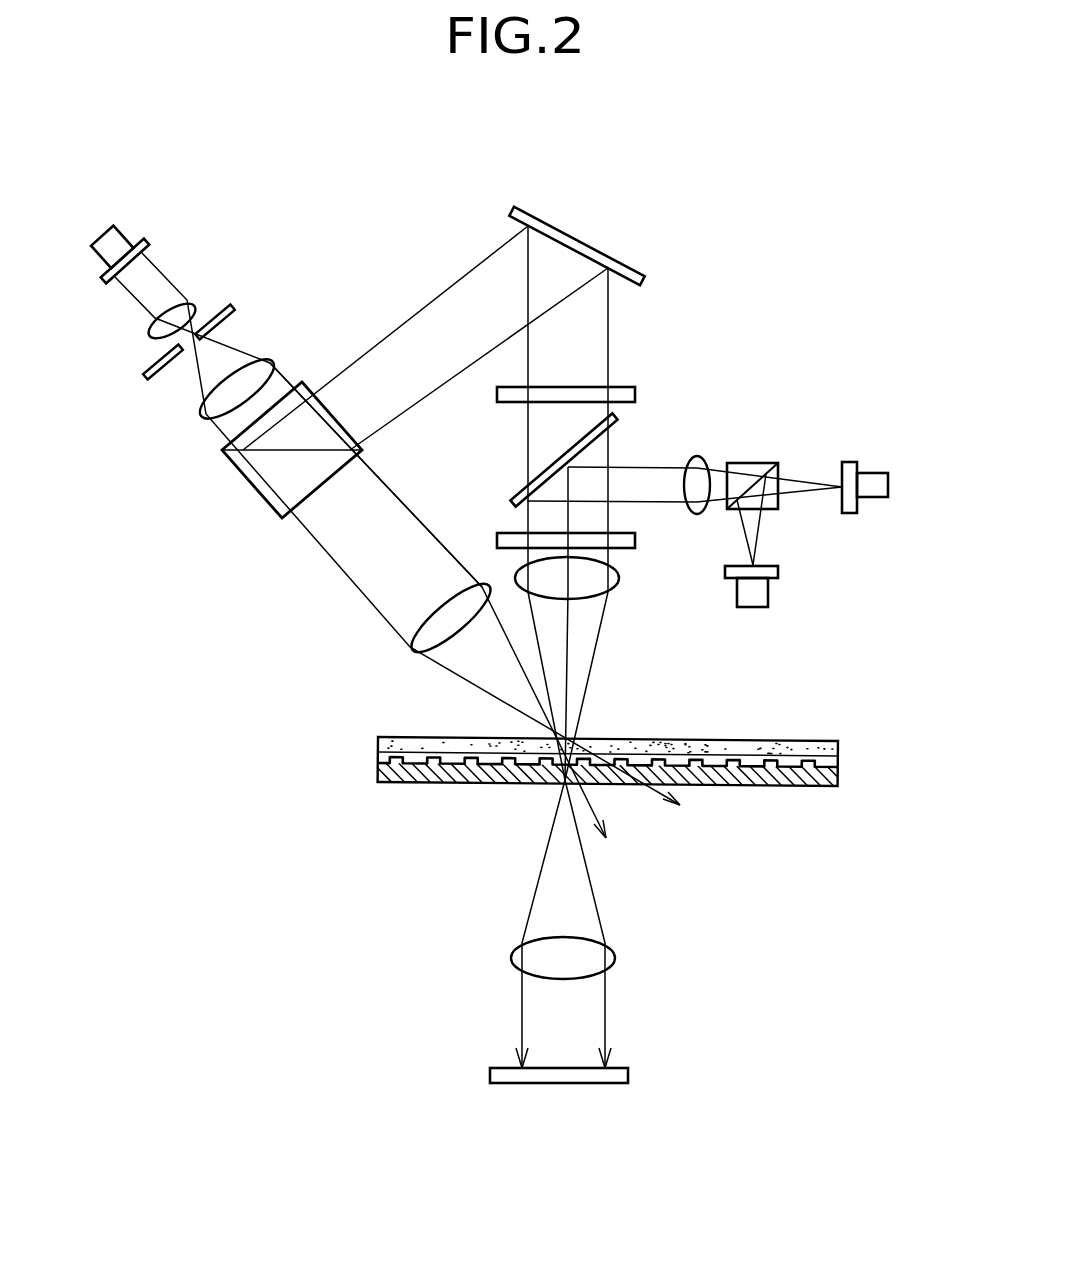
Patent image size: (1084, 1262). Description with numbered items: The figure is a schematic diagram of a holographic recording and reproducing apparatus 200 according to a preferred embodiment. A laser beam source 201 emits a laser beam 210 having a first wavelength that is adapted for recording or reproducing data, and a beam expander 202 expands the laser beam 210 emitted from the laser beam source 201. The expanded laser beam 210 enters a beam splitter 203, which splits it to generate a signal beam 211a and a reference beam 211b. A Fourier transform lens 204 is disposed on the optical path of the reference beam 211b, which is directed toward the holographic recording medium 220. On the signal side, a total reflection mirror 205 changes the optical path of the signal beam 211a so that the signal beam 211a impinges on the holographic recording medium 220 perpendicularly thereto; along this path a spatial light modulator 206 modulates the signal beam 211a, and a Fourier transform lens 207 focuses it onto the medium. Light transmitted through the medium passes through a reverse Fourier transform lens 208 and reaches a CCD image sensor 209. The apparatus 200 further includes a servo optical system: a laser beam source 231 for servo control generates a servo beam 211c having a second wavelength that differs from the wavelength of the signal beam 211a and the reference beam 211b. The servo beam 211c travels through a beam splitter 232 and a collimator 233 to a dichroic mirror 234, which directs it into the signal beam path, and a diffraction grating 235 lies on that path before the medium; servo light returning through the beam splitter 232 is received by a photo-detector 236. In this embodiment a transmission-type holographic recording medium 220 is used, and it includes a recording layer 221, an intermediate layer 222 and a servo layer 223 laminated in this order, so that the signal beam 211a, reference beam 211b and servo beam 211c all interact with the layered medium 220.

The holographic recording and reproducing apparatus 200 is at (836, 167).
The laser beam source 201 is at (142, 254).
The beam expander 202 is at (237, 247).
The beam splitter 203 is at (262, 492).
The Fourier transform lens 204 is at (410, 645).
The total reflection mirror 205 is at (553, 227).
The spatial light modulator 206 is at (628, 393).
The Fourier transform lens 207 is at (612, 585).
The reverse Fourier transform lens 208 is at (612, 956).
The CCD image sensor 209 is at (628, 1075).
The laser beam 210 is at (135, 303).
The signal beam 211a is at (402, 320).
The reference beam 211b is at (347, 568).
The servo beam 211c is at (803, 493).
The holographic recording medium 220 is at (596, 758).
The recording layer 221 is at (378, 741).
The intermediate layer 222 is at (378, 758).
The servo layer 223 is at (378, 775).
The laser beam source for servo control 231 is at (870, 476).
The beam splitter 232 is at (762, 463).
The collimator 233 is at (703, 462).
The dichroic mirror 234 is at (517, 490).
The diffraction grating 235 is at (515, 534).
The photo-detector 236 is at (770, 590).